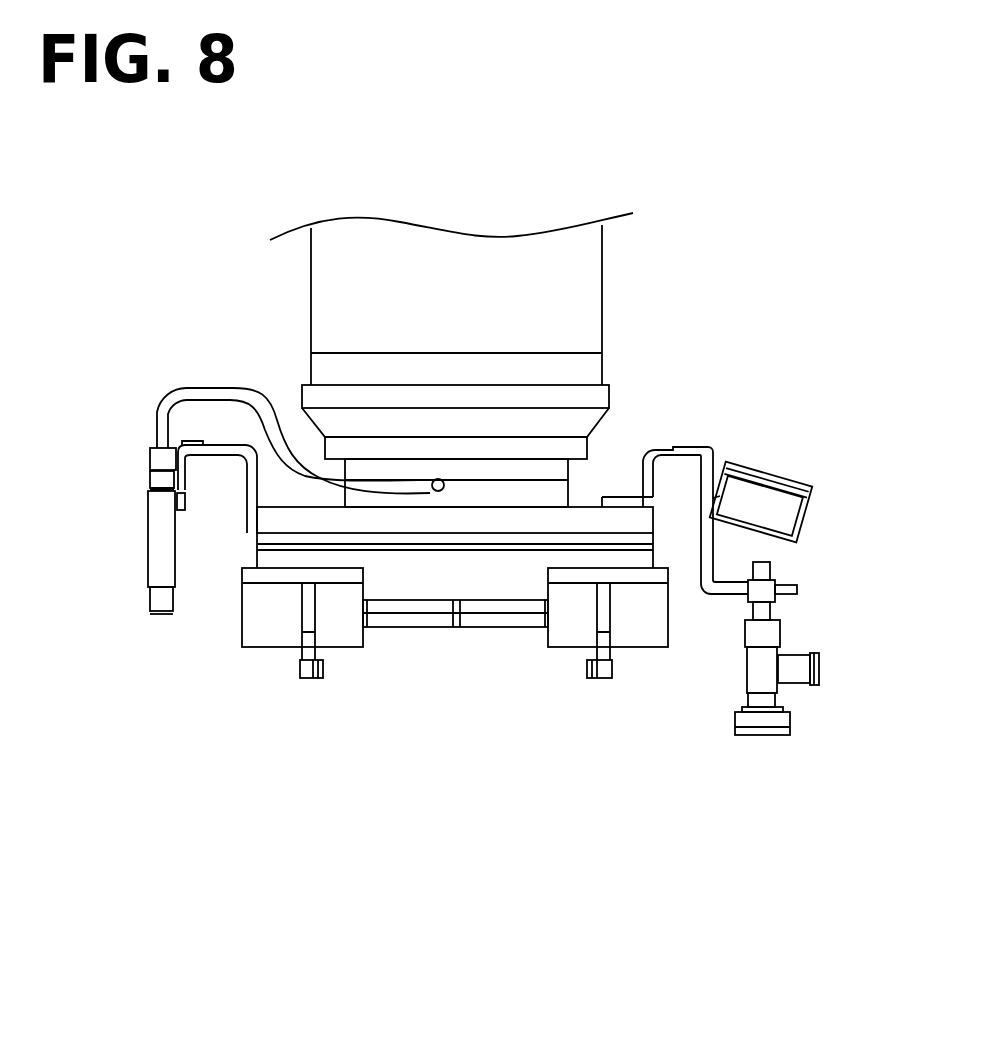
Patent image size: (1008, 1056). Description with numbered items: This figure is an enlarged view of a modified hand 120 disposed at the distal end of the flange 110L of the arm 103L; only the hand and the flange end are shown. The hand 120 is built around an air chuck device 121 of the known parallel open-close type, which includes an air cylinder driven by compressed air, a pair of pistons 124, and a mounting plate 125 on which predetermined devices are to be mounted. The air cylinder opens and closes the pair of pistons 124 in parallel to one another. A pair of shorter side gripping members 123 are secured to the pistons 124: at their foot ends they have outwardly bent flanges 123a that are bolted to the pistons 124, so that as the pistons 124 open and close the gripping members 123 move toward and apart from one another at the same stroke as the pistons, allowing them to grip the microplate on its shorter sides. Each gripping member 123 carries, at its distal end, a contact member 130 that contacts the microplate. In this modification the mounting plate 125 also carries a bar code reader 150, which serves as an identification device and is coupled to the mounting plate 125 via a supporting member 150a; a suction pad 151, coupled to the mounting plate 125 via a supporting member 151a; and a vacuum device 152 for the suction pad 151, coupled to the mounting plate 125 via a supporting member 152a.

The arm 103L is at (268, 293).
The flange 110L is at (313, 368).
The air chuck device 121 is at (623, 437).
The hand 120 is at (393, 718).
The mounting plate 125 is at (290, 522).
The shorter side gripping members 123 is at (455, 694).
The flanges 123a is at (273, 633).
The pistons 124 is at (563, 630).
The contact member 130 is at (305, 689).
The vacuum device 152 is at (158, 542).
The supporting member 152a is at (227, 452).
The supporting member 150a is at (690, 457).
The bar code reader 150 is at (782, 517).
The supporting member 151a is at (713, 502).
The suction pad 151 is at (762, 715).